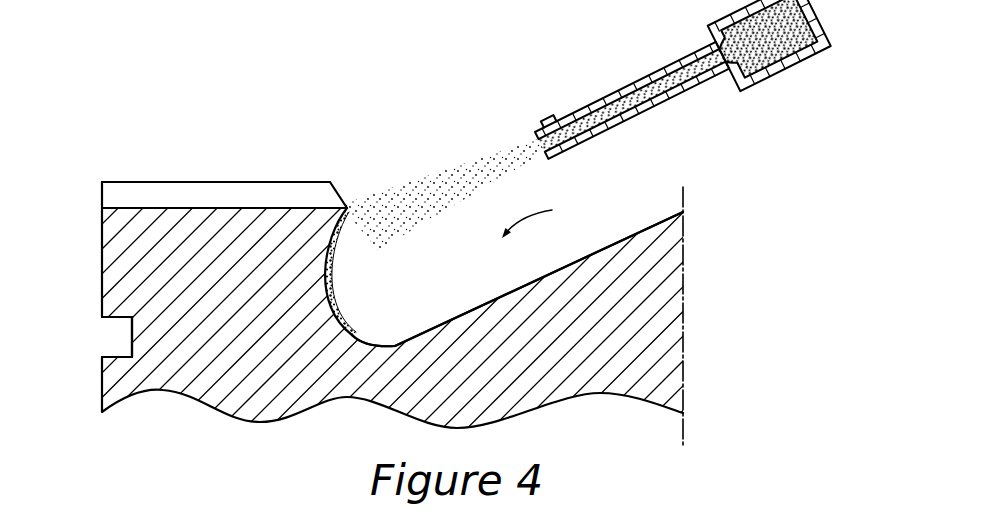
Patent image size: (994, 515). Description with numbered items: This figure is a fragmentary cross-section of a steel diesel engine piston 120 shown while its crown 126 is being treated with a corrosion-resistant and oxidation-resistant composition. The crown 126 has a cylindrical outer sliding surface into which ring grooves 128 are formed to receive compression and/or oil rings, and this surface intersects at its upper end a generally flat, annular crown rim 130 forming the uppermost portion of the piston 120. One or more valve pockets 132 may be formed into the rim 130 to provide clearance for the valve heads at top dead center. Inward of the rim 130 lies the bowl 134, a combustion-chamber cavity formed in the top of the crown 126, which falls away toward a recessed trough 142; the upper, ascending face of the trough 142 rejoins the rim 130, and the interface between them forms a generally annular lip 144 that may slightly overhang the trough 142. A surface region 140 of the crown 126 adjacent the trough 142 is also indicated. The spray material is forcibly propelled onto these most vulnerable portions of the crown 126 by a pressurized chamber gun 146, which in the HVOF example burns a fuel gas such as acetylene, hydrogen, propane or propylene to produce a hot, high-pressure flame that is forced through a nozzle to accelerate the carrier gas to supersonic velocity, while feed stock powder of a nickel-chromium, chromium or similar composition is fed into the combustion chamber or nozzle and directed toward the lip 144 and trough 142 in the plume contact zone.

The piston 120 is at (96, 94).
The crown 126 is at (92, 177).
The ring grooves 128 is at (112, 356).
The crown rim 130 is at (190, 182).
The valve pockets 132 is at (278, 208).
The bowl 134 is at (551, 216).
The inclined body surface 140 is at (660, 218).
The recessed trough 142 is at (355, 333).
The annular lip 144 is at (348, 215).
The pressurized chamber gun 146 is at (790, 68).